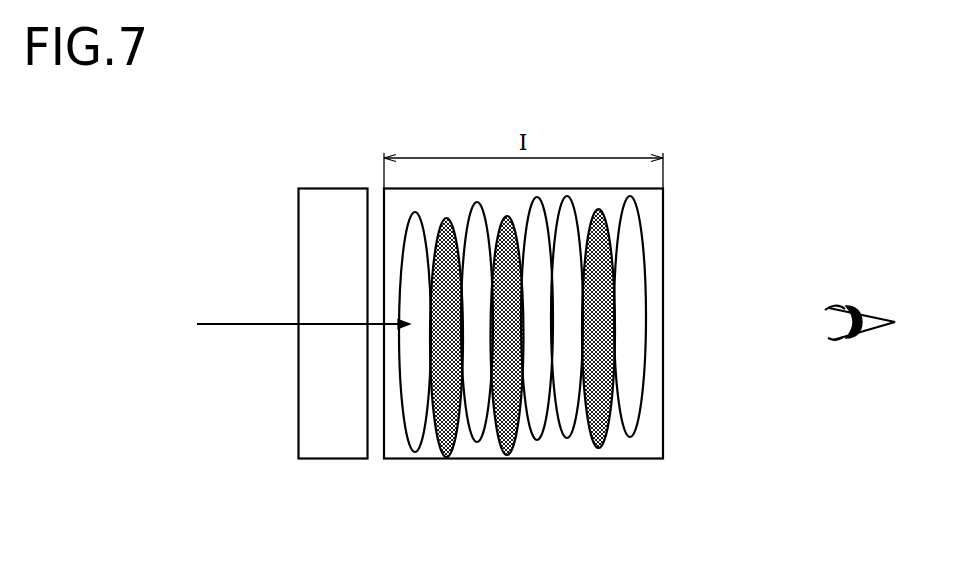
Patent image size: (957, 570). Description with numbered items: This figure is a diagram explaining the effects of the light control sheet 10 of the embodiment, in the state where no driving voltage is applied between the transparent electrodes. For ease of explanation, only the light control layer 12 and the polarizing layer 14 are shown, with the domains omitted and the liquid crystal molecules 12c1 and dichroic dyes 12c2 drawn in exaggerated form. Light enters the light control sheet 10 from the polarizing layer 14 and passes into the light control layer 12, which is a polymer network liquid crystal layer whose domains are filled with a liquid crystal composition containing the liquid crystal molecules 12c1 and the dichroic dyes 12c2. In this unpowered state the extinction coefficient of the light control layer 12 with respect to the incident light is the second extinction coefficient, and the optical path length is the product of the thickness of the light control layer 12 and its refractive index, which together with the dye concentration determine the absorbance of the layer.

The light control sheet 10 is at (684, 153).
The light control layer 12 is at (575, 357).
The liquid crystal molecules 12c1 is at (645, 383).
The dichroic dyes 12c2 is at (445, 455).
The polarizing layer 14 is at (334, 459).